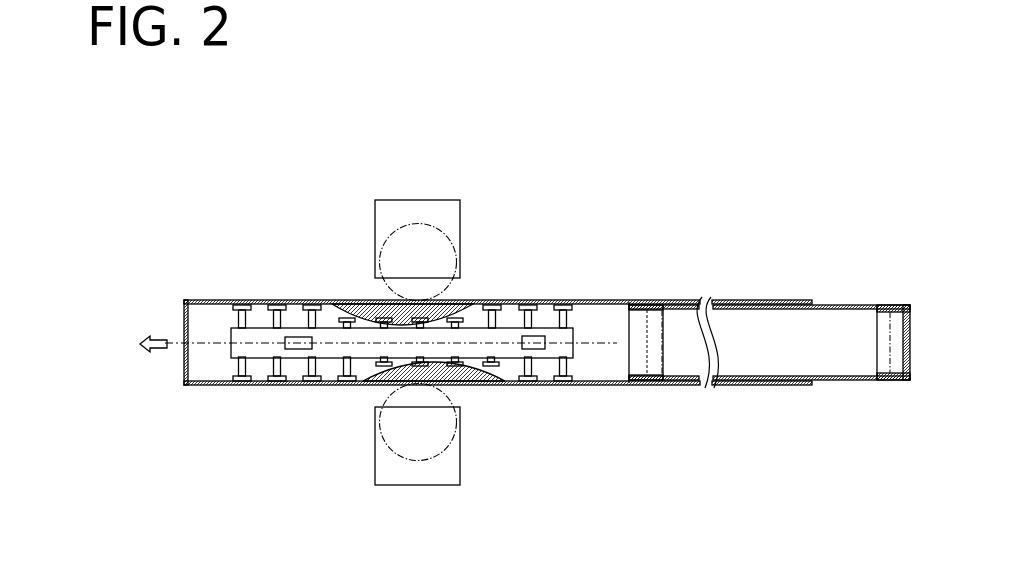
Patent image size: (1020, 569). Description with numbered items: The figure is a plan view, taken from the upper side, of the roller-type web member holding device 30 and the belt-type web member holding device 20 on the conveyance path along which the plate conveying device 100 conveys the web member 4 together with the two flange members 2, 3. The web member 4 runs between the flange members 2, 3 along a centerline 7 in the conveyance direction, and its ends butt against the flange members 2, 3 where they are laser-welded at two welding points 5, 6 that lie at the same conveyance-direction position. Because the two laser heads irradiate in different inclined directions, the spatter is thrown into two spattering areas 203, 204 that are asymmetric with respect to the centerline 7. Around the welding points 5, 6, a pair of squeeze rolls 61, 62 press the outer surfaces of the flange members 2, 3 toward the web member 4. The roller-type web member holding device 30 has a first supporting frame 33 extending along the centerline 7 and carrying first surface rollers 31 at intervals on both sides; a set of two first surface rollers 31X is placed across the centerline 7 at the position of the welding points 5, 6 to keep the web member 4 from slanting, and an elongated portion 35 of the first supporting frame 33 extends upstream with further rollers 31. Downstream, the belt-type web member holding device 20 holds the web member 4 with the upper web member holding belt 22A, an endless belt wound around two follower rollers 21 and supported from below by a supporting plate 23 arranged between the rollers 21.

The plate conveying device 100 is at (572, 162).
The flange member 2 is at (242, 304).
The flange member 3 is at (242, 385).
The web member 4 is at (208, 369).
The welding point 5 is at (440, 307).
The welding point 6 is at (425, 383).
The centerline 7 is at (175, 343).
The belt-type web member holding device 20 is at (845, 305).
The roller 21 is at (647, 372).
The upper web member holding belt 22A is at (860, 381).
The supporting plate 23 is at (835, 362).
The roller-type web member holding device 30 is at (507, 328).
The first surface roller 31 is at (567, 305).
The first surface roller 31X is at (480, 304).
The first supporting frame 33 is at (545, 360).
The elongated portion 35 is at (512, 360).
The squeeze roll 61 is at (447, 233).
The squeeze roll 62 is at (448, 446).
The spattering area 203 is at (356, 305).
The spattering area 204 is at (374, 382).